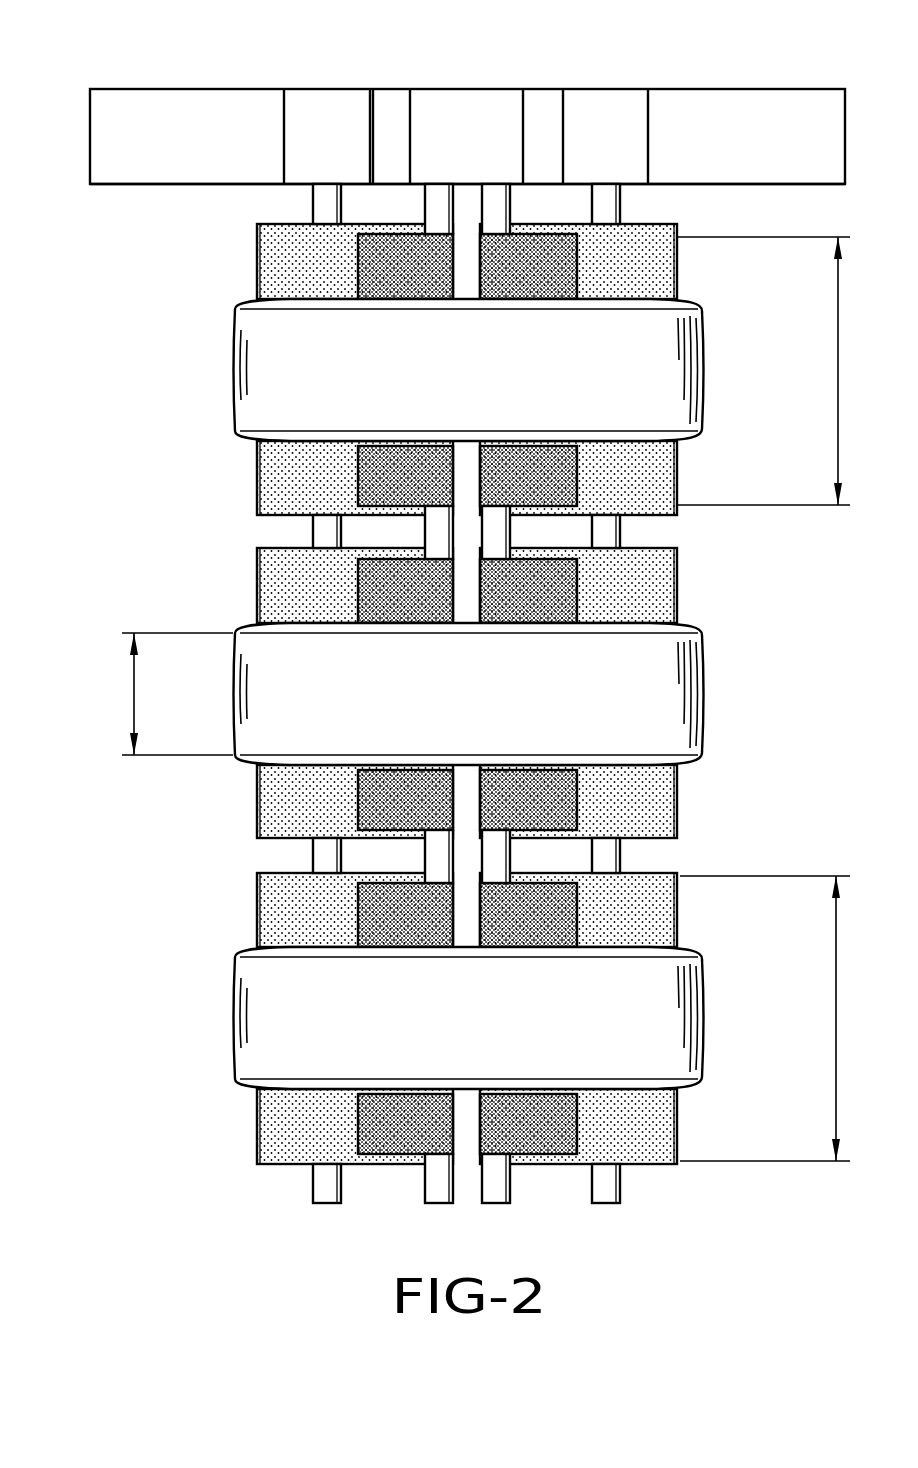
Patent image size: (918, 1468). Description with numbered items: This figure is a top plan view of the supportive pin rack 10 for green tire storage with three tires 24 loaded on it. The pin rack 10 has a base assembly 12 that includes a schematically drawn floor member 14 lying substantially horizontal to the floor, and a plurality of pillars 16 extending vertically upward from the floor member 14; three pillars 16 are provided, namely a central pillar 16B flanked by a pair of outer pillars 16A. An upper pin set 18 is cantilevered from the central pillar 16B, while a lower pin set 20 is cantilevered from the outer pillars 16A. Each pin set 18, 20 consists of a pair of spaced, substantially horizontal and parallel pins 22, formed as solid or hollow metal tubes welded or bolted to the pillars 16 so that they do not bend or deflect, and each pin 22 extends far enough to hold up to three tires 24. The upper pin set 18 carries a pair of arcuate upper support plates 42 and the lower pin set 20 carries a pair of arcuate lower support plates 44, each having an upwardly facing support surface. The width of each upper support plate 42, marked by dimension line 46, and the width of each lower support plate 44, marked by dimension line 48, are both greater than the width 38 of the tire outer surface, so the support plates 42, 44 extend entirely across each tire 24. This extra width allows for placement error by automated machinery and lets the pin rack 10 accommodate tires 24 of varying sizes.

The supportive pin rack 10 is at (176, 969).
The base assembly 12 is at (203, 196).
The floor member 14 is at (150, 107).
The pillars 16 is at (328, 107).
The outer pillars 16A is at (302, 152).
The central pillar 16B is at (442, 152).
The upper pin set 18 is at (441, 1220).
The lower pin set 20 is at (313, 1221).
The pins 22 is at (433, 545).
The tires 24 is at (222, 408).
The width of tire outer surface 38 is at (134, 689).
The upper support plates 42 is at (377, 268).
The lower support plates 44 is at (292, 482).
The width of upper support plate 46 is at (838, 364).
The width of lower support plate 48 is at (836, 1010).